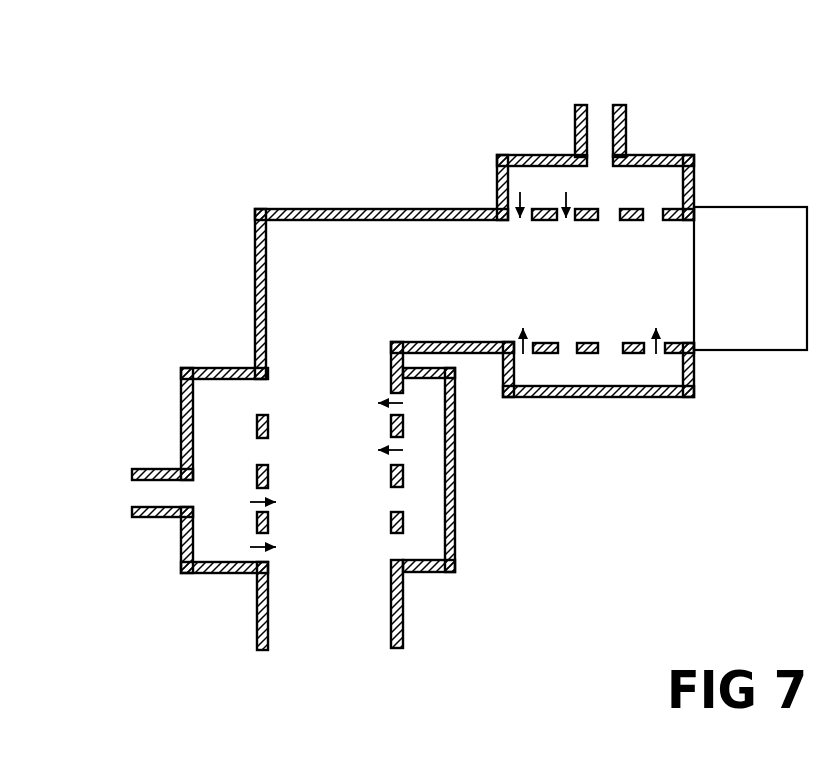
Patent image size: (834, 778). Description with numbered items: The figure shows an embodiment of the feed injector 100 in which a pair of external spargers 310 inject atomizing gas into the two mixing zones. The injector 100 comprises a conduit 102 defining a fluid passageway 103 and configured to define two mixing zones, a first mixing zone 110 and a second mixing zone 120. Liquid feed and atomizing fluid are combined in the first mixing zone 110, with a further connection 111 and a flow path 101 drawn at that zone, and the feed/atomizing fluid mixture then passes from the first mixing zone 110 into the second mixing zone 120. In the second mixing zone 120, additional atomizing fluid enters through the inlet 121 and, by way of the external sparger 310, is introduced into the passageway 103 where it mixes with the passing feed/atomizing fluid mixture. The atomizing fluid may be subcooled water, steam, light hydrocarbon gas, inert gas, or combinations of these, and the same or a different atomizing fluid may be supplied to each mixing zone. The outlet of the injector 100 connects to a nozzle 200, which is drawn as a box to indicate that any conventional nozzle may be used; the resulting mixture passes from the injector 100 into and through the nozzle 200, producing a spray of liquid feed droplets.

The feed injector 100 is at (329, 118).
The gas outlet passage 101 is at (328, 638).
The conduit 102 is at (488, 357).
The fluid passageway 103 is at (435, 295).
The first mixing zone 110 is at (358, 497).
The first gas inlet 111 is at (140, 493).
The second mixing zone 120 is at (622, 293).
The inlet 121 is at (599, 115).
The nozzle 200 is at (727, 206).
The external sparger 310 is at (455, 555).